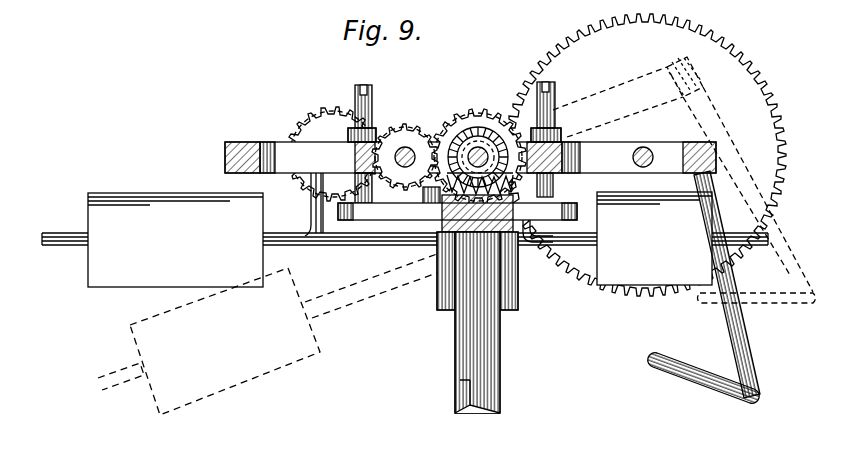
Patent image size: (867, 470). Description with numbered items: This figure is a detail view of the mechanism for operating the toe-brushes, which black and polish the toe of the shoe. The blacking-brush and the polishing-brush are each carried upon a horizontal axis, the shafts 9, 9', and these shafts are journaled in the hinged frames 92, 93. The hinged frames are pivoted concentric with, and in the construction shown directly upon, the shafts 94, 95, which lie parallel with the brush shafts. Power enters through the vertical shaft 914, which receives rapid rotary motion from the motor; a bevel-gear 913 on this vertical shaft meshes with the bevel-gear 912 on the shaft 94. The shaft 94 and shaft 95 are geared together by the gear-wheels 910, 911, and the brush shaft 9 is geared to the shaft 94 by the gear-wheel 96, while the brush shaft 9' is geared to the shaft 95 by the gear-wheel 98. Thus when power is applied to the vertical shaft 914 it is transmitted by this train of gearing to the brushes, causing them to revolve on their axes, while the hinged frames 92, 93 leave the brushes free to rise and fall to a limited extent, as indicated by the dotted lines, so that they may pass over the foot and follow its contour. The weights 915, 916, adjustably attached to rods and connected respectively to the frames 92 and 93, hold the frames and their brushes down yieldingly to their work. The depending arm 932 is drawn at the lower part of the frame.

The horizontal axis (shaft) 9 is at (642, 143).
The horizontal axis (shaft) 9' is at (326, 177).
The hinged frame 92 is at (733, 150).
The hinged frame 93 is at (228, 147).
The shaft 94 is at (555, 125).
The shaft 95 is at (425, 186).
The gear-wheel 96 is at (563, 46).
The gear-wheel 98 is at (318, 116).
The gear-wheel 910 is at (388, 122).
The gear-wheel 911 is at (476, 118).
The bevel-gear 912 is at (500, 126).
The bevel-gear 913 is at (557, 180).
The vertical shaft 914 is at (487, 356).
The weight 915 is at (654, 238).
The weight 916 is at (262, 304).
The arm 932 is at (704, 366).